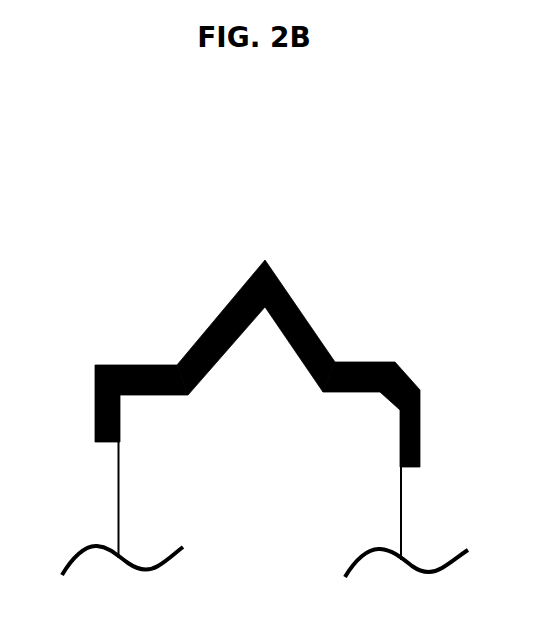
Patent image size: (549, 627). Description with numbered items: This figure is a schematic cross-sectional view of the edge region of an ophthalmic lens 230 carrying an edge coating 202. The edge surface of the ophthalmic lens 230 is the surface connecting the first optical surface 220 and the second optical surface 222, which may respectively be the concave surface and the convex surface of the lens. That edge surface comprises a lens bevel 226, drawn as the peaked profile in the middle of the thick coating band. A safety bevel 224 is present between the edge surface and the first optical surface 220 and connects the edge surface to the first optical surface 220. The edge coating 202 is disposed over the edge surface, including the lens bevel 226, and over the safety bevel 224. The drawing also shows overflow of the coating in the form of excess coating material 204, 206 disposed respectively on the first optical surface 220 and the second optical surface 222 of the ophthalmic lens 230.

The edge coating 202 is at (208, 320).
The excess coating material 204 is at (422, 428).
The excess coating material 206 is at (93, 403).
The first optical surface 220 is at (402, 520).
The second optical surface 222 is at (113, 508).
The safety bevel 224 is at (385, 400).
The lens bevel 226 is at (280, 330).
The ophthalmic lens 230 is at (392, 172).